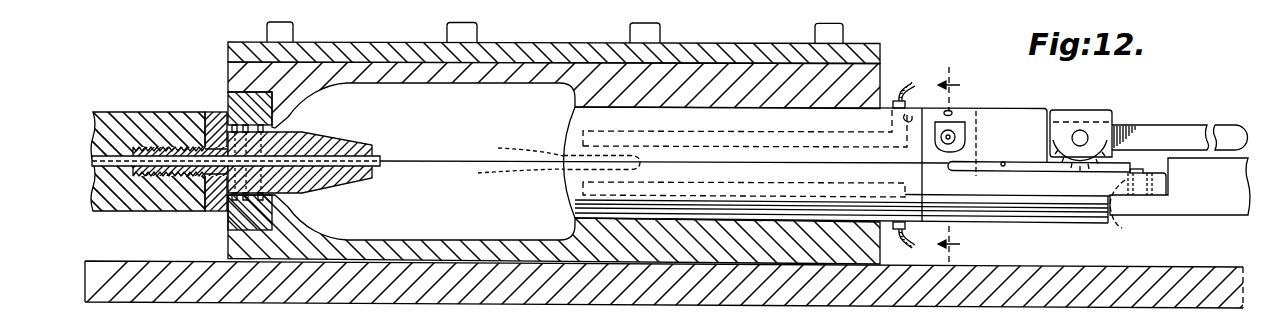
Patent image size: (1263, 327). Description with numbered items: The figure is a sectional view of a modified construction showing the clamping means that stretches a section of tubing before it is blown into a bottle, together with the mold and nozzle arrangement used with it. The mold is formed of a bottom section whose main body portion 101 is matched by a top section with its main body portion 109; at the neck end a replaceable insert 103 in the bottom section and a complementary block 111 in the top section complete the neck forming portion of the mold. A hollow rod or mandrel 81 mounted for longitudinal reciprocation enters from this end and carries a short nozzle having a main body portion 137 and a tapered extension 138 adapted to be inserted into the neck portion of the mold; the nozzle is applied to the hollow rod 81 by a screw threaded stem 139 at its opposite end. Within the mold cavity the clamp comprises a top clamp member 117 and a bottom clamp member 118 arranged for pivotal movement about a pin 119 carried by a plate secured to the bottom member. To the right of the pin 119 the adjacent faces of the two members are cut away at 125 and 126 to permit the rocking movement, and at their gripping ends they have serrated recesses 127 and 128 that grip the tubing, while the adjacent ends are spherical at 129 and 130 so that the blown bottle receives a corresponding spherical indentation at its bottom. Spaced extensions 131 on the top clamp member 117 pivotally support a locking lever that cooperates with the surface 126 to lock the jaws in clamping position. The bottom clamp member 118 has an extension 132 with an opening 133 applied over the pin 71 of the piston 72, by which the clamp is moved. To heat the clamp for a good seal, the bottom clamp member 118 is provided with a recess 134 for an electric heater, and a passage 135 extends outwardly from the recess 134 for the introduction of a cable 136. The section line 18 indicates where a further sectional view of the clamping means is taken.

The section line 18 is at (956, 162).
The pin 71 is at (1136, 169).
The piston 72 is at (1226, 209).
The mandrel or nozzle element 81 is at (133, 200).
The main body portion of bottom mold section 101 is at (687, 272).
The insert 103 is at (236, 220).
The main body portion of top mold section 109 is at (710, 82).
The block 111 is at (236, 100).
The top clamp member 117 is at (595, 113).
The bottom clamp member 118 is at (575, 213).
The pin 119 is at (951, 134).
The cut away portion 125 is at (1004, 162).
The cut away portion 126 is at (1017, 173).
The recess 127 is at (512, 144).
The recess 128 is at (502, 172).
The spherical end 129 is at (558, 135).
The spherical end 130 is at (560, 181).
The spaced extensions 131 is at (1085, 117).
The extension 132 is at (1155, 178).
The opening 133 is at (1122, 227).
The recess 134 is at (756, 183).
The passage 135 is at (912, 113).
The cable 136 is at (896, 99).
The main body portion of nozzle 137 is at (283, 183).
The tapered extension 138 is at (358, 143).
The screw threaded stem 139 is at (165, 147).